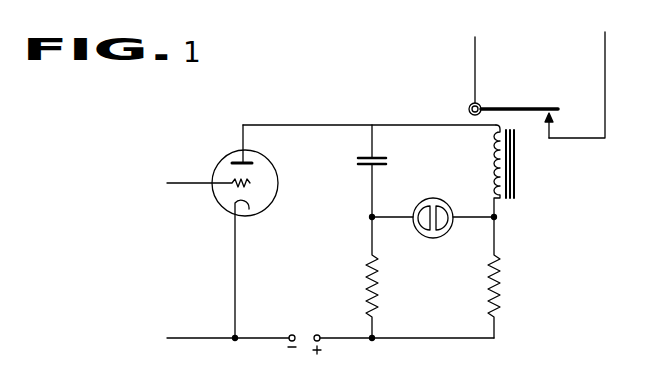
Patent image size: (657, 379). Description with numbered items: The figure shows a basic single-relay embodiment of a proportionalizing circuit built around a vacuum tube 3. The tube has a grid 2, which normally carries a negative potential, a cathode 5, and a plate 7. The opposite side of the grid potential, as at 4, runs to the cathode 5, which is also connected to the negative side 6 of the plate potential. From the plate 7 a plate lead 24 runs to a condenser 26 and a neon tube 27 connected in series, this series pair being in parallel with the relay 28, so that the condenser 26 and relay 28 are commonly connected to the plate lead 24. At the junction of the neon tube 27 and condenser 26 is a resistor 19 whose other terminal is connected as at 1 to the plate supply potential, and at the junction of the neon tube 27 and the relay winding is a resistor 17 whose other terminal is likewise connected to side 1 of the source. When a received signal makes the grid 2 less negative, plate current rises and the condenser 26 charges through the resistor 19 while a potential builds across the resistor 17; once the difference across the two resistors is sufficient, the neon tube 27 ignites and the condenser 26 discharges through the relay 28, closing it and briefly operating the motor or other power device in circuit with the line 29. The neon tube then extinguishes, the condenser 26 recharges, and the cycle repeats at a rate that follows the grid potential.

The plate supply potential side 1 is at (320, 334).
The grid 2 is at (208, 185).
The vacuum tube 3 is at (224, 158).
The opposite side of the grid potential 4 is at (214, 338).
The cathode 5 is at (242, 212).
The negative side of the plate potential 6 is at (290, 334).
The plate 7 is at (253, 160).
The resistor 17 is at (489, 297).
The resistor 19 is at (365, 284).
The plate lead 24 is at (336, 128).
The condenser 26 is at (366, 167).
The neon tube 27 is at (452, 190).
The relay 28 is at (518, 177).
The line 29 is at (605, 84).